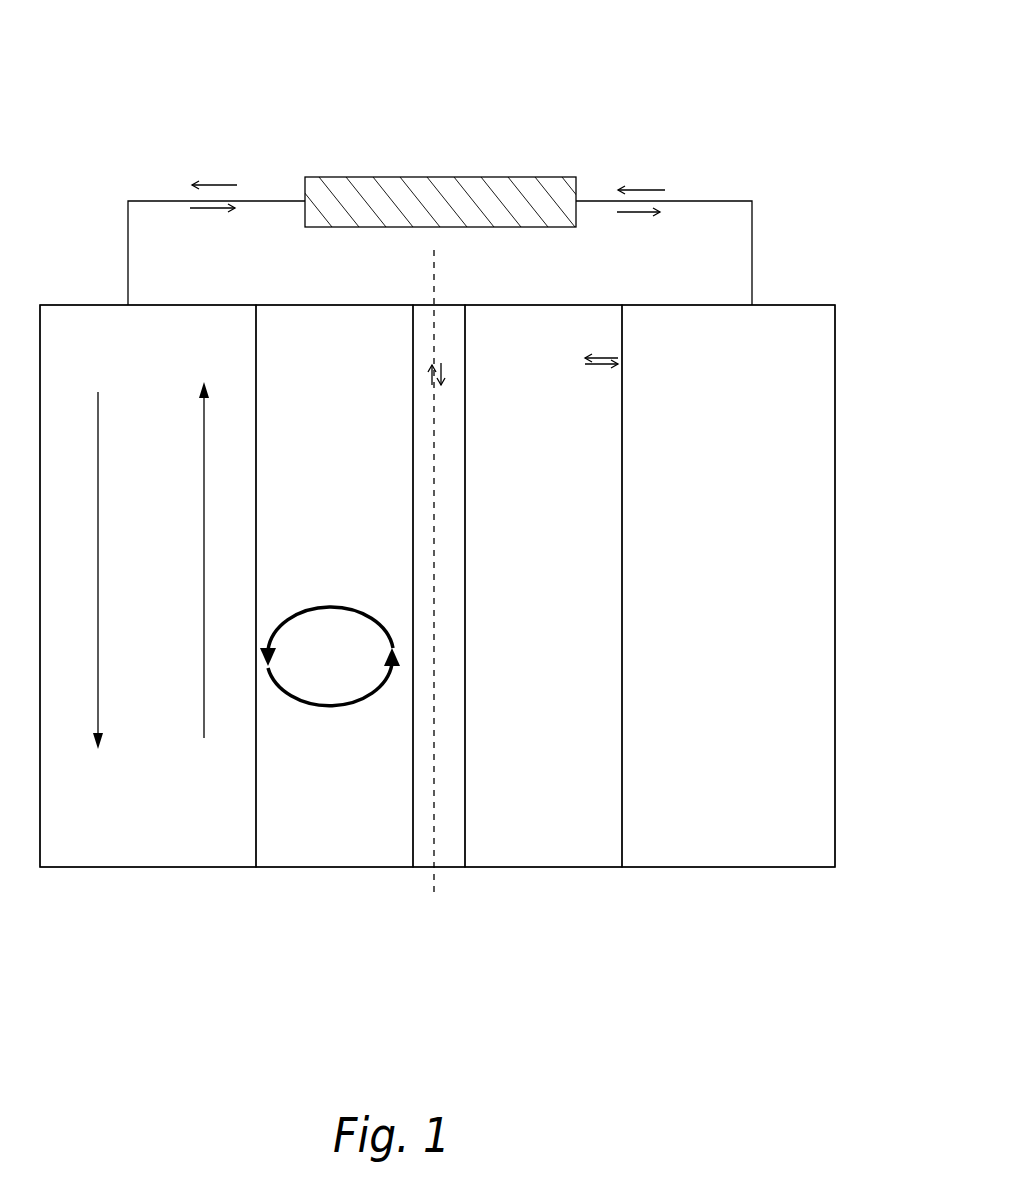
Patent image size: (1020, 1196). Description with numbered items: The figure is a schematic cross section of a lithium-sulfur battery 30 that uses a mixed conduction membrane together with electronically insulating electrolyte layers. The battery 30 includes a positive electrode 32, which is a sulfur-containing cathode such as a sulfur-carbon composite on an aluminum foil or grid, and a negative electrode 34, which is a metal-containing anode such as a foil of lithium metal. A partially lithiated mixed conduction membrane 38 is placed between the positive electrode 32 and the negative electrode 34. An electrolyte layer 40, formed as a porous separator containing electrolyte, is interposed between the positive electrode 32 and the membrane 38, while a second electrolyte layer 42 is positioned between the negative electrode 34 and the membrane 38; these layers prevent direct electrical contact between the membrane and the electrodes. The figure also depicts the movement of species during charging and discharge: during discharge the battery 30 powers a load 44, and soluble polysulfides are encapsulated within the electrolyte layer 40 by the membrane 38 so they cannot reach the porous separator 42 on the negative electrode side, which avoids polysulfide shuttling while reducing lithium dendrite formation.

The lithium-sulfur battery 30 is at (668, 84).
The positive electrode 32 is at (95, 305).
The negative electrode 34 is at (790, 305).
The mixed conduction membrane 38 is at (428, 853).
The electrolyte layer 40 is at (315, 837).
The electrolyte layer 42 is at (533, 830).
The load 44 is at (433, 185).